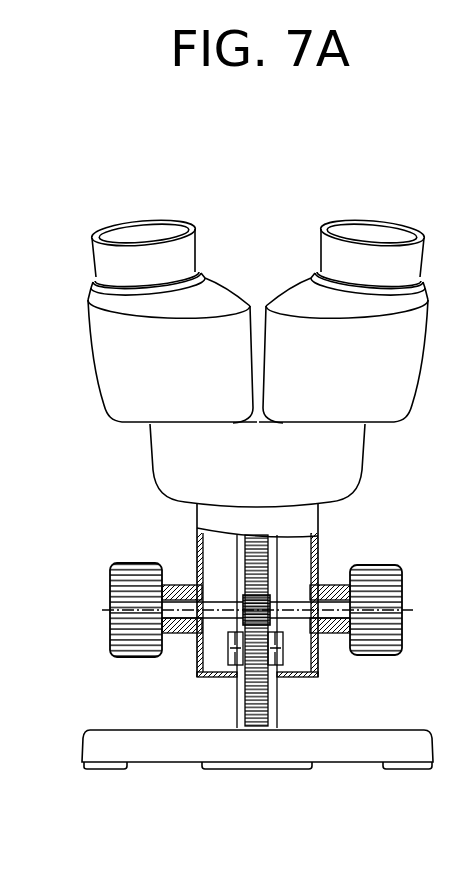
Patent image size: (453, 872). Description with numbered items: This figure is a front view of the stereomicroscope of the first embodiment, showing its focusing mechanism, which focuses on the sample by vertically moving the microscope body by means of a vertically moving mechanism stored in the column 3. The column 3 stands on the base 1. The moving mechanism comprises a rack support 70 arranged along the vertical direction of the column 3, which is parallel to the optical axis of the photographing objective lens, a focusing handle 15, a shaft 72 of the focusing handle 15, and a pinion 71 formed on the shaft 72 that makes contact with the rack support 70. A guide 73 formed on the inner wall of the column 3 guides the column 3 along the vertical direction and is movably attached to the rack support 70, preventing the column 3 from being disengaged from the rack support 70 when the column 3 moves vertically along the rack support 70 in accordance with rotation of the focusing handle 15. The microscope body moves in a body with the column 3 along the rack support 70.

The base 1 is at (173, 752).
The column 3 is at (212, 517).
The focusing handle 15 is at (110, 587).
The rack support 70 is at (268, 568).
The pinion 71 is at (240, 595).
The shaft 72 is at (288, 600).
The guide 73 is at (283, 653).